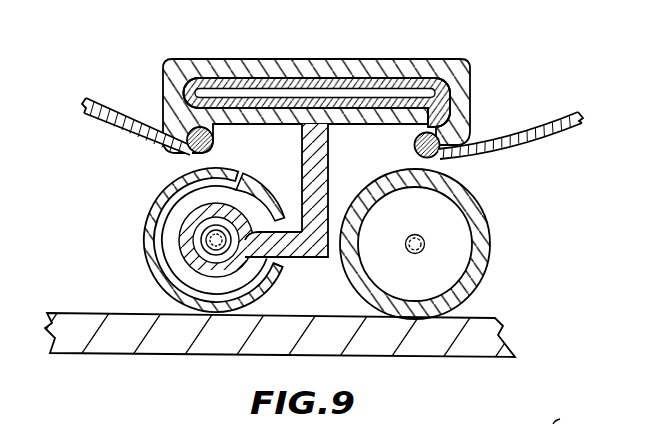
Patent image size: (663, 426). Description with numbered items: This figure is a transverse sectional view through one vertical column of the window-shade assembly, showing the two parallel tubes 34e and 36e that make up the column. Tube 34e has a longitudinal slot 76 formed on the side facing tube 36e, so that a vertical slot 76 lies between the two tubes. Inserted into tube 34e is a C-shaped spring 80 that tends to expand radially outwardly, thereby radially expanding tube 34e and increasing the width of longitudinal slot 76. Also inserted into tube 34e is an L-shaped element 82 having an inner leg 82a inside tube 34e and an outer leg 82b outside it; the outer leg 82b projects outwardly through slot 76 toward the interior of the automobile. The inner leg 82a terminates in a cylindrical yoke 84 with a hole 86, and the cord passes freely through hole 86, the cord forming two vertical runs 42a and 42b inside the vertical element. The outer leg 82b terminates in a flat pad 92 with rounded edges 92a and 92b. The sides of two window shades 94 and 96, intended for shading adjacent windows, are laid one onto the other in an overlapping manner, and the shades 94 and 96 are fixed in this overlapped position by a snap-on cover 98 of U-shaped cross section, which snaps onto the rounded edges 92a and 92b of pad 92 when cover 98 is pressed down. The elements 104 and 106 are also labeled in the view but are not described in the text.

The tube 34e is at (186, 277).
The tube 36e is at (484, 265).
The vertical run 42a is at (185, 201).
The vertical run 42b is at (198, 220).
The longitudinal slot 76 is at (288, 264).
The C-shaped spring 80 is at (190, 300).
The L-shaped element 82 is at (334, 206).
The inner leg 82a is at (303, 222).
The outer leg 82b is at (303, 160).
The cylindrical yoke 84 is at (203, 234).
The hole 86 is at (208, 246).
The flat pad 92 is at (315, 81).
The rounded edge 92a is at (428, 114).
The rounded edge 92b is at (191, 62).
The window shade 94 is at (543, 126).
The window shade 96 is at (118, 114).
The snap-on cover 98 is at (469, 64).
The floor 104 is at (267, 362).
The surface 106 is at (576, 412).